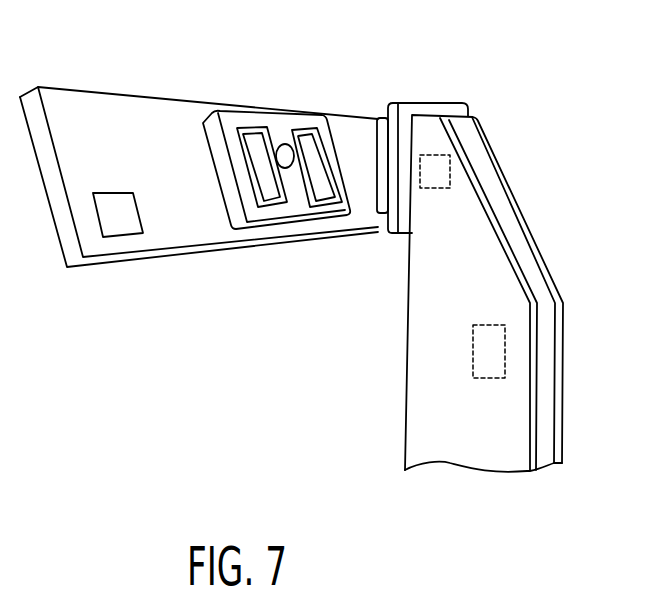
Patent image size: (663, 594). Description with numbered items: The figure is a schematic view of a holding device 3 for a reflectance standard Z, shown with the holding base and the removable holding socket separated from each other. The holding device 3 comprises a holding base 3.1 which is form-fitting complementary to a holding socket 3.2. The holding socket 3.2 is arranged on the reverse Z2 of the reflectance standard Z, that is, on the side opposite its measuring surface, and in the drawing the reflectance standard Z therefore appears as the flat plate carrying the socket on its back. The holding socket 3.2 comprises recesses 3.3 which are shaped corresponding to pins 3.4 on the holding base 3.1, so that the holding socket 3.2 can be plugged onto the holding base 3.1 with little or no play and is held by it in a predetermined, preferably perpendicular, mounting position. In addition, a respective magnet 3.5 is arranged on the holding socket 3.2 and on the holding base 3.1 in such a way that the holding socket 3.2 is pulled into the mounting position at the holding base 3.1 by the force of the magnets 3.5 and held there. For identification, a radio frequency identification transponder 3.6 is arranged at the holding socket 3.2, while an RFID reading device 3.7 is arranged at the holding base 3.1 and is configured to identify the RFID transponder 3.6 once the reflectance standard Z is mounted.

The reflectance standard Z is at (199, 144).
The reverse Z2 is at (137, 120).
The holding device 3 is at (430, 390).
The holding base 3.1 is at (458, 112).
The holding socket 3.2 is at (333, 213).
The recesses 3.3 is at (267, 199).
The pins 3.4 is at (377, 117).
The magnet 3.5 is at (284, 146).
The RFID transponder 3.6 is at (118, 226).
The RFID reading device 3.7 is at (498, 353).